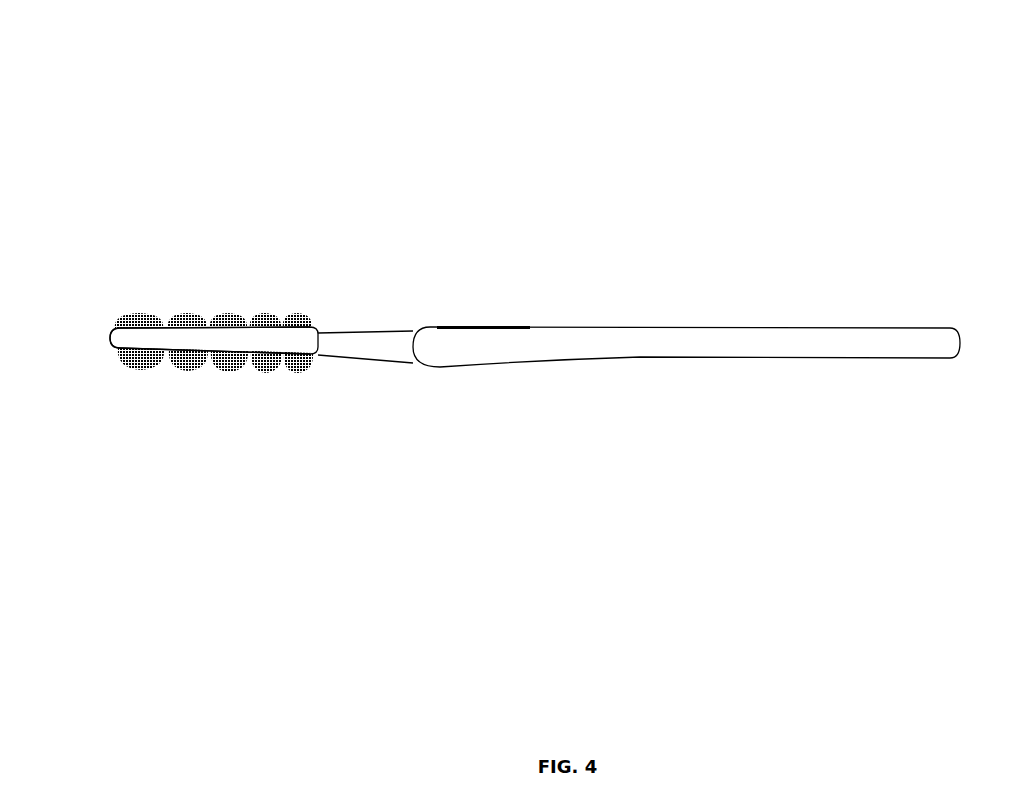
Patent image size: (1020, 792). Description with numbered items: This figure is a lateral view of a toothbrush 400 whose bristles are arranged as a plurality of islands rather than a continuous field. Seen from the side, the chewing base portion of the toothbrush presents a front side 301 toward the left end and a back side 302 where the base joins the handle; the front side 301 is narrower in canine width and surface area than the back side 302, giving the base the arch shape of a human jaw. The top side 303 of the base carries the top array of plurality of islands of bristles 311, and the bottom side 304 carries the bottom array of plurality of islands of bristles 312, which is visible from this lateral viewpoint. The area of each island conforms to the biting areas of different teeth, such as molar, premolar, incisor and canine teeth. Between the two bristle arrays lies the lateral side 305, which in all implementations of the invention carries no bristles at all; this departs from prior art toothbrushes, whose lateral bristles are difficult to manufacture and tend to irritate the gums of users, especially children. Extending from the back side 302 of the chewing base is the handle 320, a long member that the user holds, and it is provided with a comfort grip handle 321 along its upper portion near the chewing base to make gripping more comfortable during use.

The toothbrush 400 is at (568, 100).
The front side 301 is at (113, 326).
The back side 302 is at (113, 350).
The top side 303 is at (313, 332).
The bottom side 304 is at (108, 337).
The lateral side 305 is at (279, 350).
The top array of plurality of islands of bristles 311 is at (193, 321).
The bottom array of plurality of islands of bristles 312 is at (228, 357).
The handle 320 is at (778, 328).
The comfort grip handle 321 is at (477, 328).